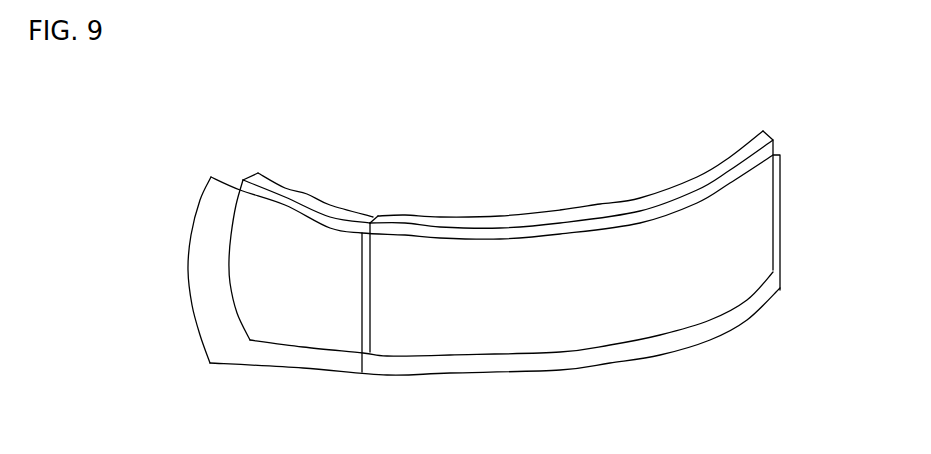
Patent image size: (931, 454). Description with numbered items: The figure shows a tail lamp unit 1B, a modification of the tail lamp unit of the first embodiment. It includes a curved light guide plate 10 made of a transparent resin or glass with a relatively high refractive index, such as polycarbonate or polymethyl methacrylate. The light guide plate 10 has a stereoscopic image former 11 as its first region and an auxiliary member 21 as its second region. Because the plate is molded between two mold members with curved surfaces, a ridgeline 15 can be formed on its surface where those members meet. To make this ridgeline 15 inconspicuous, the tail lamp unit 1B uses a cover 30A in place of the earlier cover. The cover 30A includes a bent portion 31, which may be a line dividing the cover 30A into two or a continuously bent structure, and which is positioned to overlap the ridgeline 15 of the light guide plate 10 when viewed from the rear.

The tail lamp unit 1B is at (230, 125).
The light guide plate 10 is at (257, 173).
The auxiliary member 21 is at (315, 202).
The ridgeline 15 is at (372, 268).
The stereoscopic image former 11 is at (533, 223).
The bent portion 31 is at (362, 322).
The cover 30A is at (187, 278).